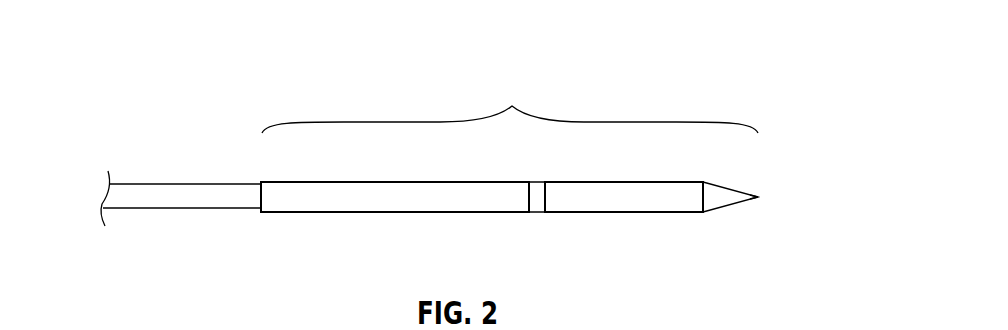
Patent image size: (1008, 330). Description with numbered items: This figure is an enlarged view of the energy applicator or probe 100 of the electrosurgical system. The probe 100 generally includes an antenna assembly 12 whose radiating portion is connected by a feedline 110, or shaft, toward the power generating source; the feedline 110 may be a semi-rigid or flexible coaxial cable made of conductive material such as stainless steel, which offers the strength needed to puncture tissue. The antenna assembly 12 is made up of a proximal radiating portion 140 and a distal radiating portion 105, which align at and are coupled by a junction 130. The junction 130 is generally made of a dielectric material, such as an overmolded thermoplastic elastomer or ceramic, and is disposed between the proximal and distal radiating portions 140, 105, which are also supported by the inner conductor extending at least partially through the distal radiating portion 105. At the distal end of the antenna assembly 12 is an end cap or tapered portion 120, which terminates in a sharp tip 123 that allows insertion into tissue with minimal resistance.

The probe 100 is at (699, 43).
The antenna assembly 12 is at (510, 105).
The feedline 110 is at (212, 184).
The proximal radiating portion 140 is at (385, 231).
The junction 130 is at (537, 182).
The distal radiating portion 105 is at (608, 231).
The tapered portion 120 is at (727, 188).
The sharp tip 123 is at (758, 197).